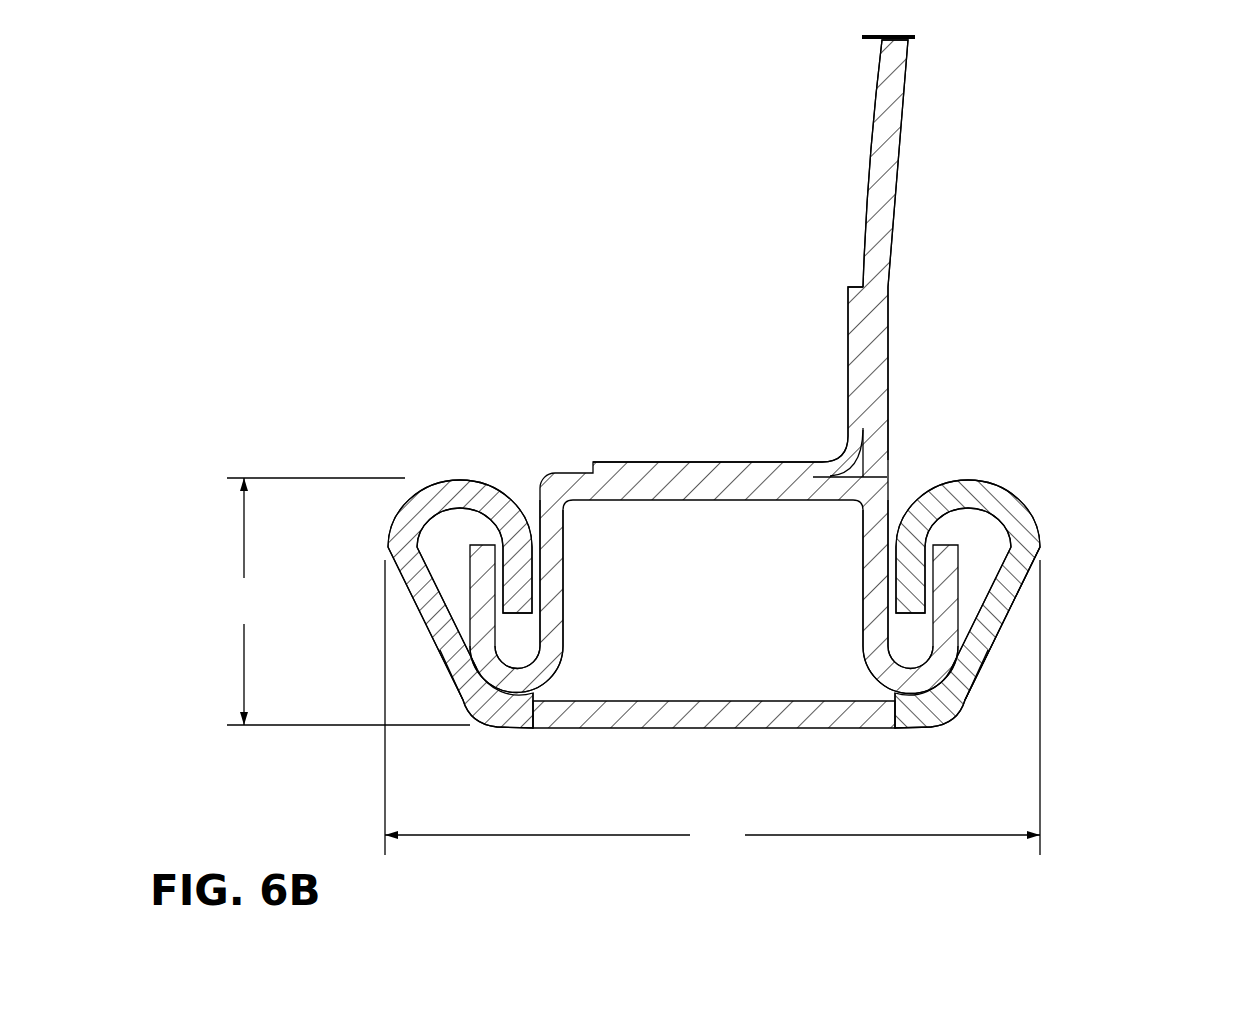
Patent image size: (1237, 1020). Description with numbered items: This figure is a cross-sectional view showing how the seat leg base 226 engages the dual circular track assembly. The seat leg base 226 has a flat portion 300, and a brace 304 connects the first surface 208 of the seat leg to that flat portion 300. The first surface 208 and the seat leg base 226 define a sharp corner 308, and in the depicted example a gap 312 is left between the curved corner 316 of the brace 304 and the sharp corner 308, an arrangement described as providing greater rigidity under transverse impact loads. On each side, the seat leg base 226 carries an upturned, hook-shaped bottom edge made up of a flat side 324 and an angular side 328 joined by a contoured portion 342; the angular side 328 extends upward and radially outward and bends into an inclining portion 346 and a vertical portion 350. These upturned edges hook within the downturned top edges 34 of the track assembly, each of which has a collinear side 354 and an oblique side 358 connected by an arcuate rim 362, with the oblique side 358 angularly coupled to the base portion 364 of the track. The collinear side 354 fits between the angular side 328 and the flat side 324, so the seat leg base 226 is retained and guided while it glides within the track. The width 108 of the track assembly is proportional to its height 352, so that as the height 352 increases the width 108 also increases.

The downturned top edges 34 is at (467, 474).
The width 108 is at (712, 707).
The first surface 208 is at (878, 190).
The seat leg base 226 is at (1078, 258).
The flat portion 300 is at (583, 470).
The brace 304 is at (843, 333).
The sharp corner 308 is at (890, 477).
The gap 312 is at (860, 468).
The curved corner 316 is at (833, 455).
The flat side 324 is at (557, 623).
The angular side 328 is at (455, 635).
The contoured portion 342 is at (532, 688).
The inclining portion 346 is at (492, 680).
The vertical portion 350 is at (1003, 557).
The height 352 is at (346, 601).
The collinear side 354 is at (517, 587).
The oblique side 358 is at (413, 603).
The arcuate rim 362 is at (442, 483).
The base portion 364 is at (776, 716).